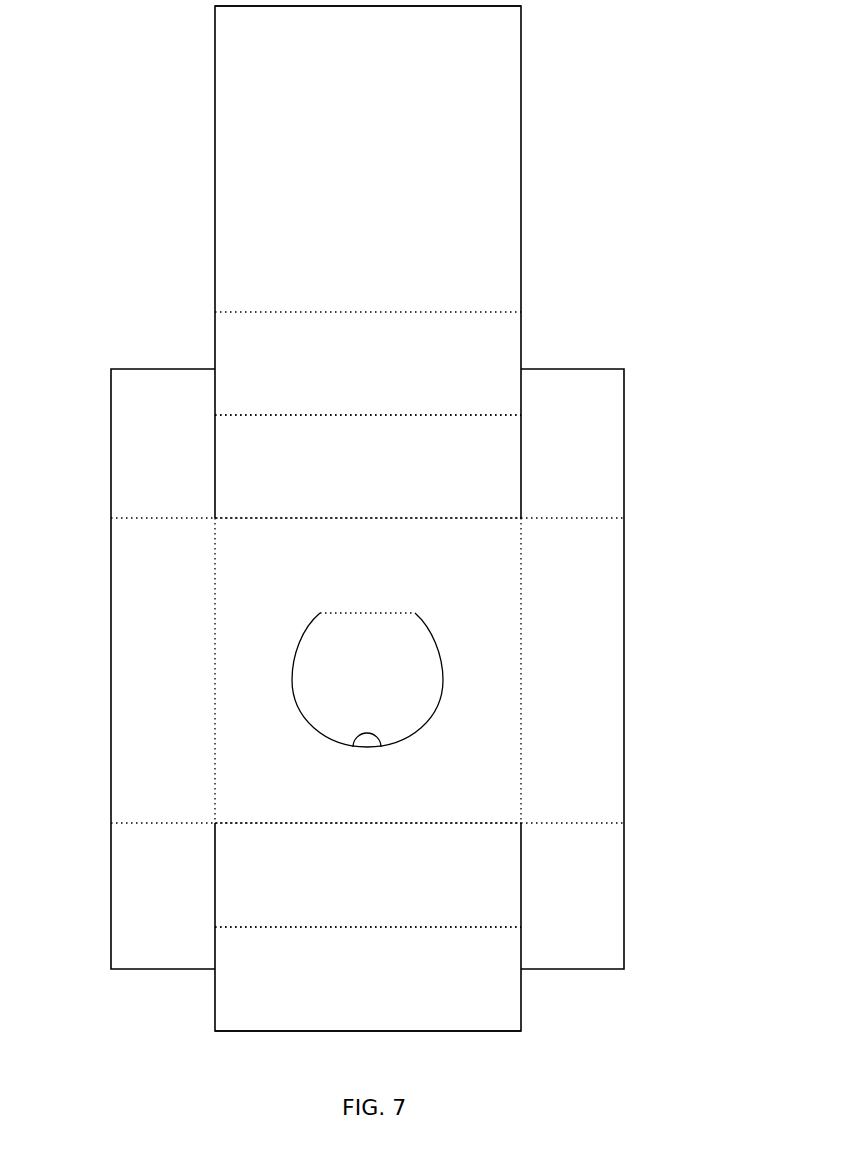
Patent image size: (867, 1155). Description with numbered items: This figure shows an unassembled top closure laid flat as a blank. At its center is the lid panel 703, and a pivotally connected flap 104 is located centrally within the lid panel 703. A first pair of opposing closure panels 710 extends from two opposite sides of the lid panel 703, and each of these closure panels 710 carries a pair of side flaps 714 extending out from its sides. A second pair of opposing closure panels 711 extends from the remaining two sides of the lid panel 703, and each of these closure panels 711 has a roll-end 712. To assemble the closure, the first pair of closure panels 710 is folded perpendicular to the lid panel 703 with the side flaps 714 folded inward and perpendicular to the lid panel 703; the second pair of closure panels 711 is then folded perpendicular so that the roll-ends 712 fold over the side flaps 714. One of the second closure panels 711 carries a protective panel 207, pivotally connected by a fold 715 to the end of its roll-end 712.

The protective panel 207 is at (495, 48).
The first pair of opposing closure panels 710 is at (135, 655).
The side flaps 714 is at (132, 406).
The fold 715 is at (294, 291).
The roll-ends 712 is at (490, 340).
The second pair of opposing closure panels 711 is at (479, 432).
The lid panel 703 is at (497, 778).
The pivotally connected flap 104 is at (310, 702).